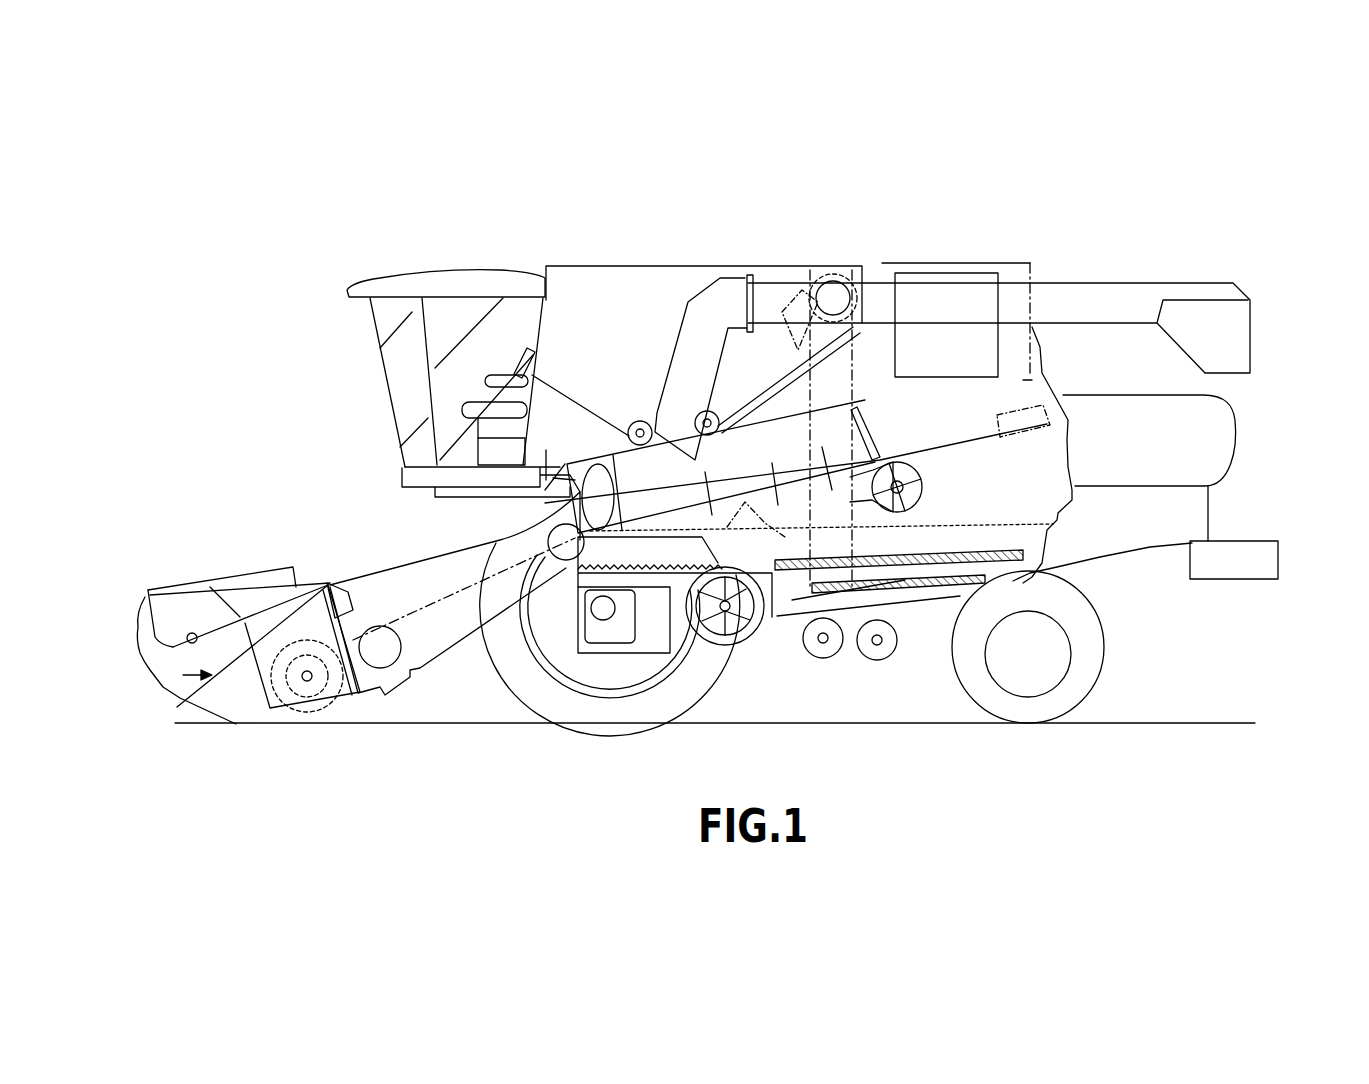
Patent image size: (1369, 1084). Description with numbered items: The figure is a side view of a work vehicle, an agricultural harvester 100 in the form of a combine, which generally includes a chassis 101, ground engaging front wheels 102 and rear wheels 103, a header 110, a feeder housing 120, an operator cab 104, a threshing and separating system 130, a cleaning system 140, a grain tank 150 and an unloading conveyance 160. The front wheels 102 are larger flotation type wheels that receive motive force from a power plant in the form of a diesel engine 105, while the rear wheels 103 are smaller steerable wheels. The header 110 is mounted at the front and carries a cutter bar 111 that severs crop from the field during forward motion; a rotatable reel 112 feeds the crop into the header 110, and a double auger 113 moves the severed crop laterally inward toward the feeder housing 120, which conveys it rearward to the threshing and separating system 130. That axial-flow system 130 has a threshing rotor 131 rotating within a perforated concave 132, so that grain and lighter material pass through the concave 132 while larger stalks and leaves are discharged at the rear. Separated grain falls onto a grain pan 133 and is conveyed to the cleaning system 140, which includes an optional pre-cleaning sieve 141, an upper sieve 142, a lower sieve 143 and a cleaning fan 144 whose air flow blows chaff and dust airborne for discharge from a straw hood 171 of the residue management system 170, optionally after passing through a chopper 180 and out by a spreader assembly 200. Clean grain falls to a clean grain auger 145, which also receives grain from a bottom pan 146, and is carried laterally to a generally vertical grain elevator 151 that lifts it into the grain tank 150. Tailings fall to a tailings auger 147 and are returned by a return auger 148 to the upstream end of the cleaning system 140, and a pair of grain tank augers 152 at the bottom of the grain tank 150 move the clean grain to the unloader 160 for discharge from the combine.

The agricultural harvester 100 is at (699, 470).
The chassis 101 is at (1043, 572).
The front wheels 102 is at (520, 677).
The rear wheels 103 is at (1098, 663).
The operator cab 104 is at (444, 383).
The diesel engine 105 is at (940, 275).
The header 110 is at (222, 625).
The cutter bar 111 is at (252, 724).
The rotatable reel 112 is at (138, 632).
The double auger 113 is at (312, 700).
The feeder housing 120 is at (410, 568).
The threshing and separating system 130 is at (726, 521).
The threshing rotor 131 is at (590, 470).
The perforated concave 132 is at (712, 474).
The grain pan 133 is at (578, 576).
The cleaning system 140 is at (808, 650).
The pre-cleaning sieve 141 is at (862, 552).
The upper sieve 142 is at (955, 558).
The lower sieve 143 is at (922, 588).
The cleaning fan 144 is at (732, 645).
The clean grain auger 145 is at (828, 659).
The bottom pan 146 is at (960, 597).
The tailings auger 147 is at (880, 659).
The return auger 148 is at (788, 503).
The grain tank 150 is at (738, 387).
The grain elevator 151 is at (855, 383).
The grain tank augers 152 is at (638, 421).
The unloading conveyance 160 is at (999, 290).
The residue management system 170 is at (1137, 525).
The straw hood 171 is at (1228, 422).
The chopper 180 is at (997, 420).
The spreader assembly 200 is at (1265, 530).